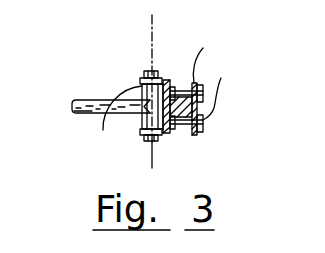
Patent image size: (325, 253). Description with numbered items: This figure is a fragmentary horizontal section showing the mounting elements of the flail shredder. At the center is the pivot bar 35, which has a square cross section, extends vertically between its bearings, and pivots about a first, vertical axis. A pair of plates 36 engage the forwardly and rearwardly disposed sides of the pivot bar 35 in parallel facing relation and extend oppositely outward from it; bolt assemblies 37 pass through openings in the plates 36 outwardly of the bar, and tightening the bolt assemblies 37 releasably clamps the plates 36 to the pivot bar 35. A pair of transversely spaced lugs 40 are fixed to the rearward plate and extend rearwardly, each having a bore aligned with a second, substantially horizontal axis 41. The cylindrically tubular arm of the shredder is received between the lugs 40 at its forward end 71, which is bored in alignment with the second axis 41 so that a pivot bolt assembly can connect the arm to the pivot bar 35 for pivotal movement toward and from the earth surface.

The pivot bar 35 is at (183, 124).
The plates 36 is at (170, 82).
The bolt assemblies 37 is at (204, 92).
The lugs 40 is at (140, 128).
The second axis 41 is at (158, 33).
The forward end 71 is at (85, 100).